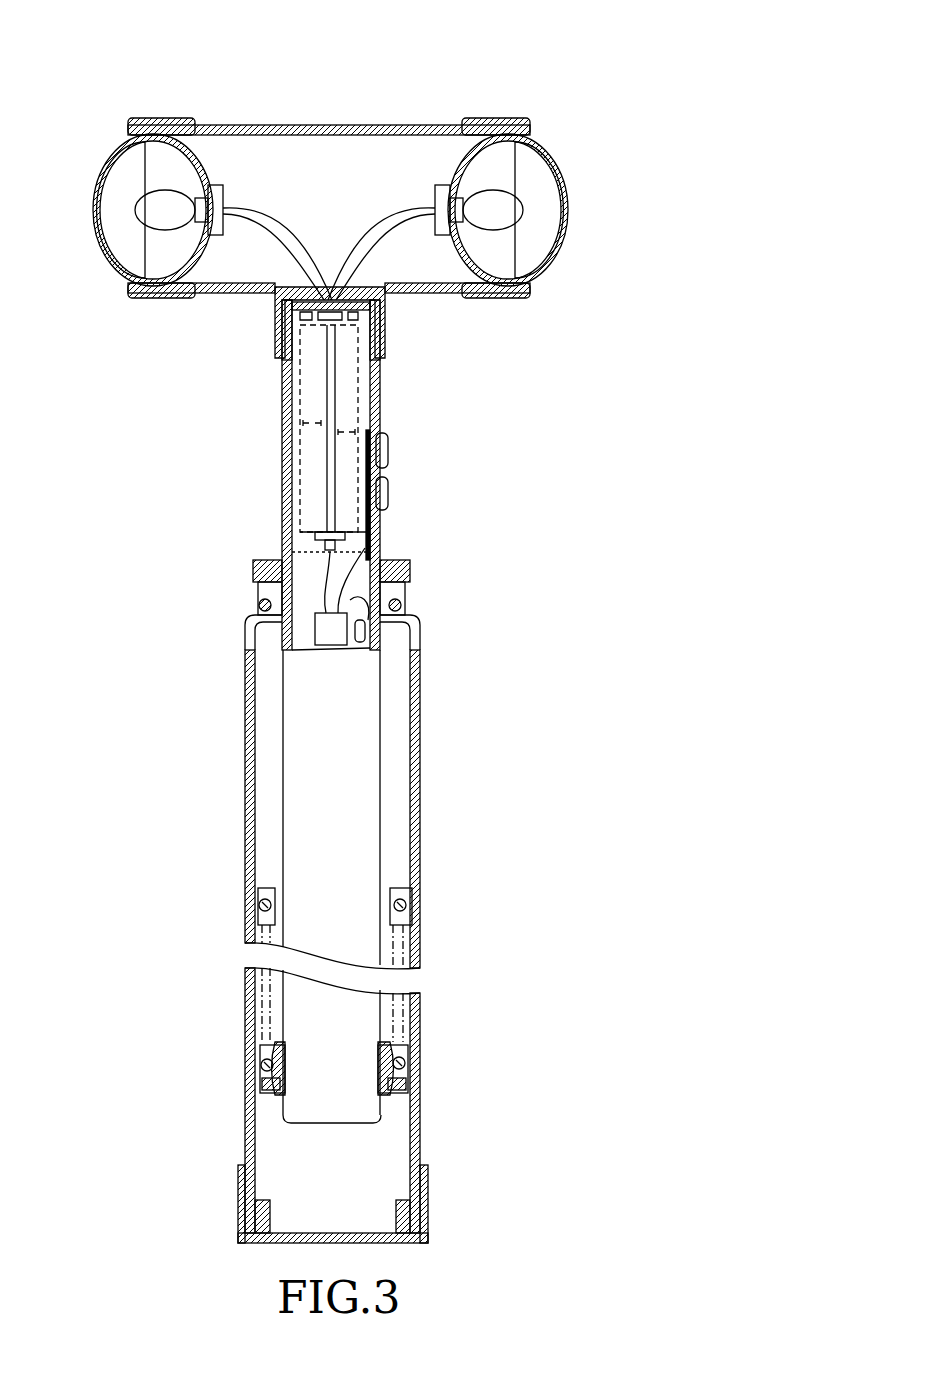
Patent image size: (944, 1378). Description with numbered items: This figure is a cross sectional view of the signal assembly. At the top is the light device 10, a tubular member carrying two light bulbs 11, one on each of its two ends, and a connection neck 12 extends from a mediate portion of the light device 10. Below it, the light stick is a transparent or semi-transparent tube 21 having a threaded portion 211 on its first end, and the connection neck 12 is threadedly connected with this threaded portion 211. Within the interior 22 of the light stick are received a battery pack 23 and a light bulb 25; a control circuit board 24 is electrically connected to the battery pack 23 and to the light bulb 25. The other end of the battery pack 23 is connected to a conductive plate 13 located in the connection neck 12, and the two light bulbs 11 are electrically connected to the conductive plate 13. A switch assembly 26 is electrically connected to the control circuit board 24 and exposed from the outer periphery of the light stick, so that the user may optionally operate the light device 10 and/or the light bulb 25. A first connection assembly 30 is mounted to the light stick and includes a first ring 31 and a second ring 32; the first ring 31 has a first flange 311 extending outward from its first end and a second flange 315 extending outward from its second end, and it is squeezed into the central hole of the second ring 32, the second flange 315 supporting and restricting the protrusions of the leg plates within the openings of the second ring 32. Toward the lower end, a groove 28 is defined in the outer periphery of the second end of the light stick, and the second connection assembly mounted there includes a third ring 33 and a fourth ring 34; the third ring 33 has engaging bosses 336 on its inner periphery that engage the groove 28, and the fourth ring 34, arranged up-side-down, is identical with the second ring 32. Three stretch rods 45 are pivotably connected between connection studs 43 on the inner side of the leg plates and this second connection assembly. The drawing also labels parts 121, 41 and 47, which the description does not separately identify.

The light device 10 is at (500, 100).
The light bulbs 11 is at (507, 208).
The connection neck 12 is at (388, 305).
The conductive plate 13 is at (277, 327).
The upper end of housing 121 is at (280, 363).
The threaded portion 211 is at (388, 348).
The tube 21 is at (328, 775).
The battery pack 23 is at (300, 457).
The switch assembly 26 is at (378, 452).
The control circuit board 24 is at (380, 535).
The interior 22 is at (290, 545).
The light bulb 25 is at (365, 662).
The first connection assembly 30 is at (440, 583).
The first flange 311 is at (260, 575).
The second ring 32 is at (255, 590).
The second flange 315 is at (258, 610).
The first ring 31 is at (407, 613).
The outer tube 41 is at (415, 790).
The connection studs 43 is at (260, 893).
The stretch rods 45 is at (268, 1010).
The third ring 33 is at (258, 1076).
The fourth ring 34 is at (410, 1080).
The groove 28 is at (393, 1053).
The engaging bosses 336 is at (392, 1072).
The bottom cap 47 is at (243, 1202).